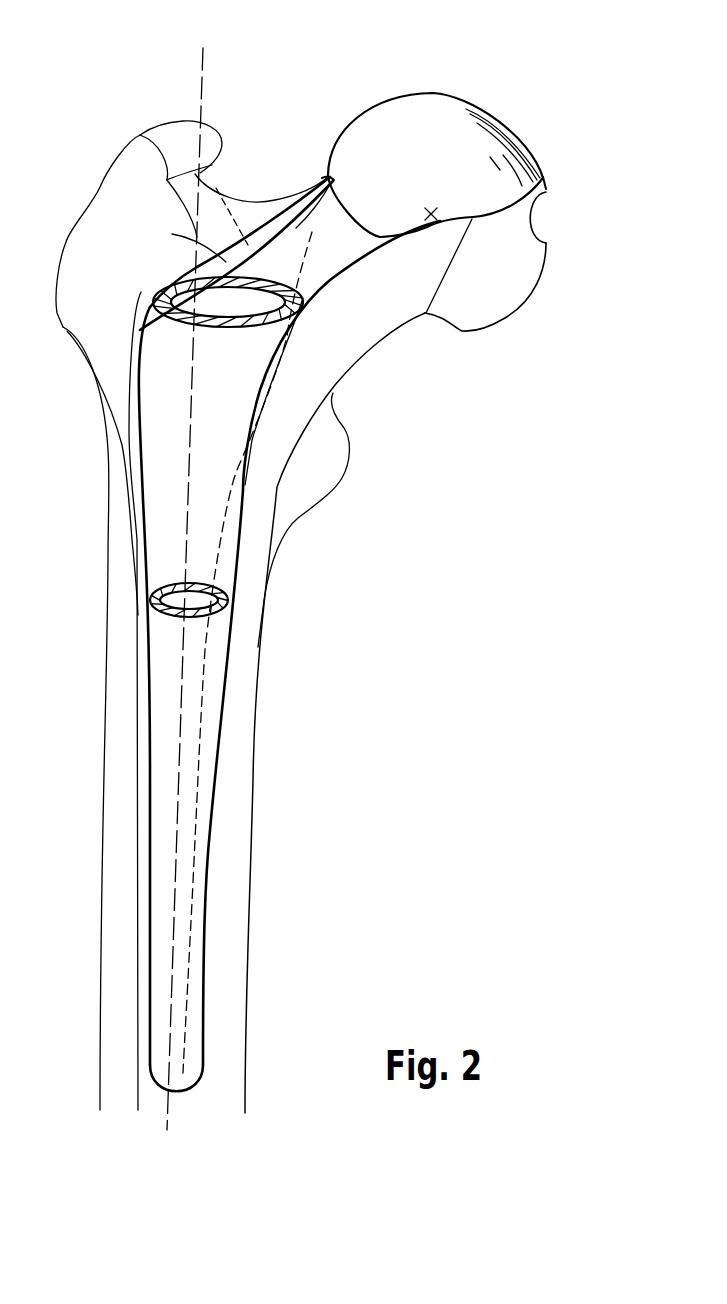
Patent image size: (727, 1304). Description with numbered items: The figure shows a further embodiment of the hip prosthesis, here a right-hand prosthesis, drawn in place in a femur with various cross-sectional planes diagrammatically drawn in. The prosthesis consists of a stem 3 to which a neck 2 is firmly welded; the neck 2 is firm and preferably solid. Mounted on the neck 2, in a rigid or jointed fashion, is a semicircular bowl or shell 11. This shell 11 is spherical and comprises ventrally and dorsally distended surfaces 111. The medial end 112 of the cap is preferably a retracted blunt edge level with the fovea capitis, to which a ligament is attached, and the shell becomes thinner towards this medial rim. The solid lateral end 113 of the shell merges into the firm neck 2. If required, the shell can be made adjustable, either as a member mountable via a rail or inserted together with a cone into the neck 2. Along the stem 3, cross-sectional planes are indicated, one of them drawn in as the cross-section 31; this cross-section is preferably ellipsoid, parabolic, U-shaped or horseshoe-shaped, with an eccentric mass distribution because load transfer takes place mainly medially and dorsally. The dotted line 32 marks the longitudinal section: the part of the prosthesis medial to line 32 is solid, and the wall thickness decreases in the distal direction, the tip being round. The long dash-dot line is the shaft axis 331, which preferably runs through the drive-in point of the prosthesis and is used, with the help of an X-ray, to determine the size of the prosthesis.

The neck 2 is at (275, 225).
The stem 3 is at (150, 792).
The semicircular bowl or shell 11 is at (507, 127).
The ventrally and dorsally distended surfaces 111 is at (398, 238).
The medial end of the cap 112 is at (543, 178).
The solid lateral end of the shell 113 is at (327, 172).
The cross-section of the stem 31 is at (223, 320).
The line 32 is at (197, 779).
The shaft axis 331 is at (202, 70).